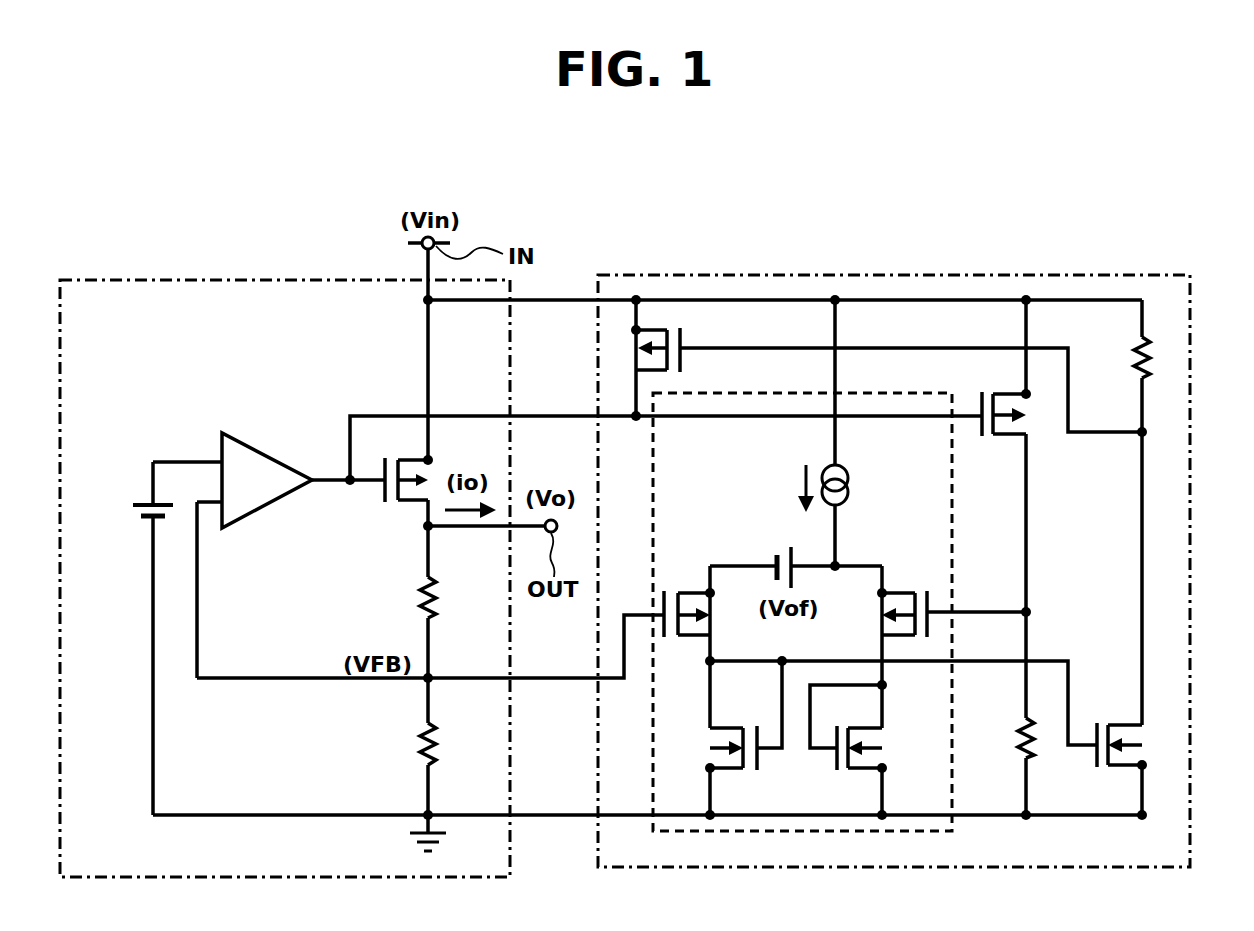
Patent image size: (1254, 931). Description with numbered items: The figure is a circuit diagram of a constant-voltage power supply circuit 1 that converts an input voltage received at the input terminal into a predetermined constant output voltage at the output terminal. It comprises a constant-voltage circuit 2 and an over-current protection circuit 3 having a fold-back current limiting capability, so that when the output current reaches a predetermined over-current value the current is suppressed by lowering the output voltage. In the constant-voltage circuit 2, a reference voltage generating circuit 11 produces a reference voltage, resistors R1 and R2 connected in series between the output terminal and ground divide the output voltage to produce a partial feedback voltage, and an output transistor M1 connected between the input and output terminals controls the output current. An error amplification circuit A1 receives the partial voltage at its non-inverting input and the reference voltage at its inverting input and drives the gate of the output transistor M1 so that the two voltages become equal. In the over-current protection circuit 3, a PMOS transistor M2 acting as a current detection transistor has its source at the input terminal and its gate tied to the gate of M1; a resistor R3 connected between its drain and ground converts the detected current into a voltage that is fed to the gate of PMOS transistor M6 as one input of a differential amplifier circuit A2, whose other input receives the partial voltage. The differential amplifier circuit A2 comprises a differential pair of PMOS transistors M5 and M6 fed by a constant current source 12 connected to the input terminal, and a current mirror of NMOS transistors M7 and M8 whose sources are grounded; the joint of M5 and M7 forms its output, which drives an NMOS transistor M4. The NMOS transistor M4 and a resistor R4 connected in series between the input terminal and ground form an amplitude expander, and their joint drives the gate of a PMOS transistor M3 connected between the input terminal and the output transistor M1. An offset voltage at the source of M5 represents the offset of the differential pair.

The constant-voltage power supply circuit 1 is at (665, 205).
The constant-voltage circuit 2 is at (235, 272).
The over-current protection circuit 3 is at (790, 266).
The reference voltage generating circuit 11 is at (128, 518).
The constant current source 12 is at (849, 480).
The error amplification circuit A1 is at (269, 555).
The differential amplifier circuit A2 is at (640, 710).
The output transistor M1 is at (490, 459).
The PMOS transistor M2 is at (833, 365).
The PMOS transistor M3 is at (886, 363).
The NMOS transistor M4 is at (1122, 626).
The PMOS transistor M5 is at (689, 613).
The PMOS transistor M6 is at (951, 625).
The NMOS transistor M7 is at (743, 740).
The NMOS transistor M8 is at (848, 750).
The resistor R1 is at (409, 597).
The resistor R2 is at (409, 744).
The resistor R3 is at (1006, 769).
The resistor R4 is at (1120, 387).